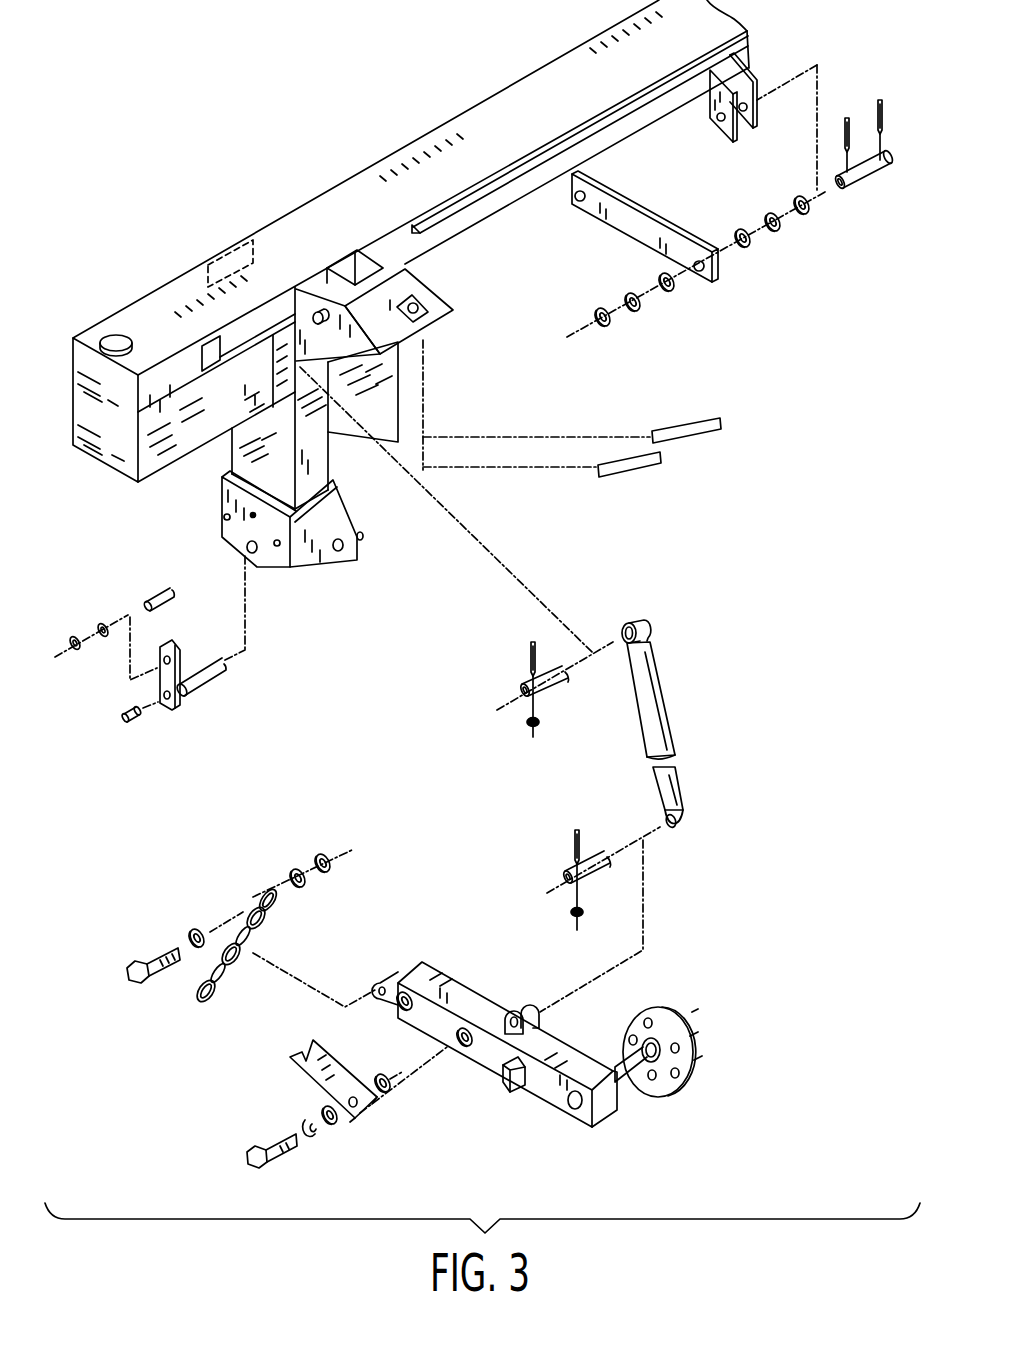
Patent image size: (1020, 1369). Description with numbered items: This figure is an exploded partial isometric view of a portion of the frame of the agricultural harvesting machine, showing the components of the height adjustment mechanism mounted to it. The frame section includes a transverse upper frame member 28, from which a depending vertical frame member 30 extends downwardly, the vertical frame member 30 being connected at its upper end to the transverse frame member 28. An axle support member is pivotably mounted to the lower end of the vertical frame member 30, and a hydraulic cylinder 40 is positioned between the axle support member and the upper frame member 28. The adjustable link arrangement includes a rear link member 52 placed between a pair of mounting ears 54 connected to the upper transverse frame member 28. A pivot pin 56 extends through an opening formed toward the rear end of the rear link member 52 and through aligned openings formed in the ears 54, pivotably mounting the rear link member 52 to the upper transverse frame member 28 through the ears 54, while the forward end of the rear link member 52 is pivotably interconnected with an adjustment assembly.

The transverse upper frame member 28 is at (293, 211).
The vertical frame member 30 is at (230, 462).
The hydraulic cylinder 40 is at (663, 696).
The rear link member 52 is at (618, 236).
The mounting ears 54 is at (747, 65).
The pivot pin 56 is at (873, 182).